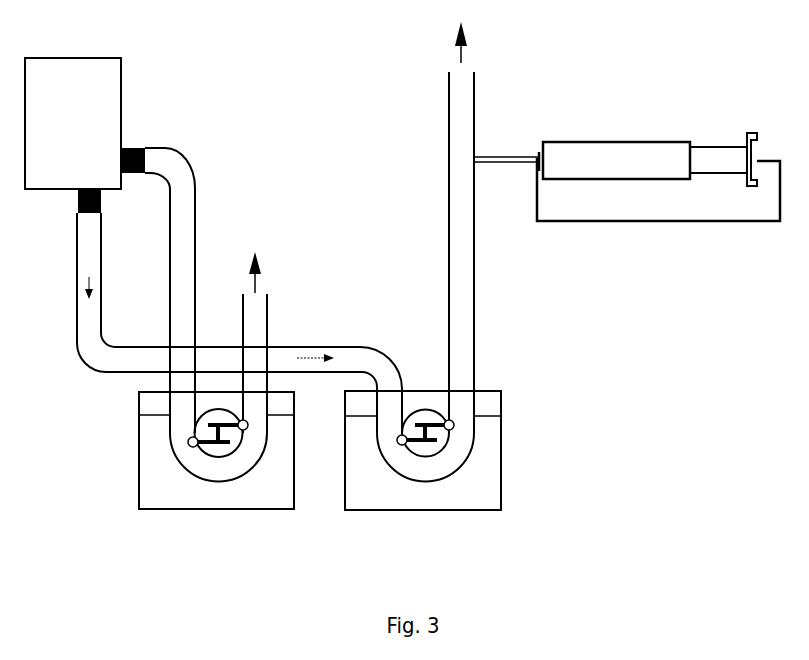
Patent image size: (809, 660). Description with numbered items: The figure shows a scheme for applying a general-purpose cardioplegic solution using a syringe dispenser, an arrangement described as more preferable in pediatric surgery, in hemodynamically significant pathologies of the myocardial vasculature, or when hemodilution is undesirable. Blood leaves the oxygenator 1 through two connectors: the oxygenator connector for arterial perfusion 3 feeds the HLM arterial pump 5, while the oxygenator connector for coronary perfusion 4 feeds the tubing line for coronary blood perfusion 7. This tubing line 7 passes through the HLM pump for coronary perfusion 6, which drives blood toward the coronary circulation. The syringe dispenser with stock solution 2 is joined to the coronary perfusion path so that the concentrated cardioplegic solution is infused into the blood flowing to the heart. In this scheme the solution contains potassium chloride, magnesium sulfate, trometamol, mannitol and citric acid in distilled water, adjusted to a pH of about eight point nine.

The oxygenator 1 is at (73, 123).
The syringe dispenser with stock solution 2 is at (626, 177).
The oxygenator connector for arterial perfusion 3 is at (158, 274).
The oxygenator connector for coronary perfusion 4 is at (78, 205).
The HLM arterial pump 5 is at (216, 380).
The HLM pump for coronary perfusion 6 is at (423, 266).
The tubing line for coronary blood perfusion 7 is at (228, 323).